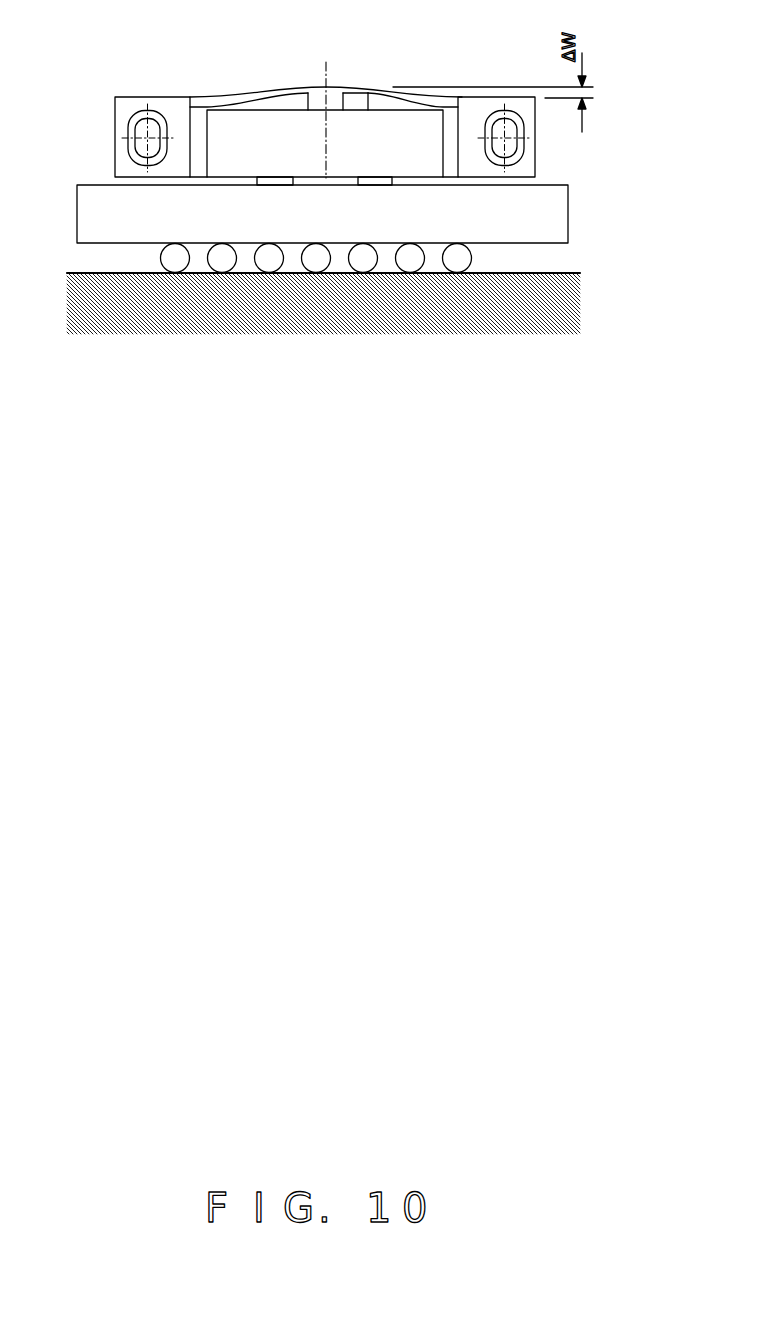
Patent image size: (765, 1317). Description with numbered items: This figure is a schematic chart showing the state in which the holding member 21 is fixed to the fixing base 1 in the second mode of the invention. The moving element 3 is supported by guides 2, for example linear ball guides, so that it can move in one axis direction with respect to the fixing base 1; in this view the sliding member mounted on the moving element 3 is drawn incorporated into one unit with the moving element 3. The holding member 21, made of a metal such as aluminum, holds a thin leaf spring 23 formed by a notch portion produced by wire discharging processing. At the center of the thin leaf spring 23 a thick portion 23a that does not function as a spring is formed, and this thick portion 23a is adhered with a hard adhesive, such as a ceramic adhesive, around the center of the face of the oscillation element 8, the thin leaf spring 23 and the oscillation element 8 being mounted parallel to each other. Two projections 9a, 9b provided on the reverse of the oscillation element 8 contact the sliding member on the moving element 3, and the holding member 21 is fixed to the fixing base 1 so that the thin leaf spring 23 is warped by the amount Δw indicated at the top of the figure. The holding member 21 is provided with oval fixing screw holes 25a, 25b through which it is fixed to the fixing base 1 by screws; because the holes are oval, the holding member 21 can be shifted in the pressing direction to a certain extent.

The fixing base 1 is at (577, 305).
The guides 2 is at (470, 258).
The moving element 3 is at (568, 213).
The oscillation element 8 is at (372, 93).
The projection 9a is at (382, 185).
The projection 9b is at (270, 185).
The holding member 21 is at (142, 96).
The thin leaf spring 23 is at (245, 96).
The thick portion 23a is at (320, 93).
The fixing screw hole 25a is at (132, 143).
The fixing screw hole 25b is at (517, 147).